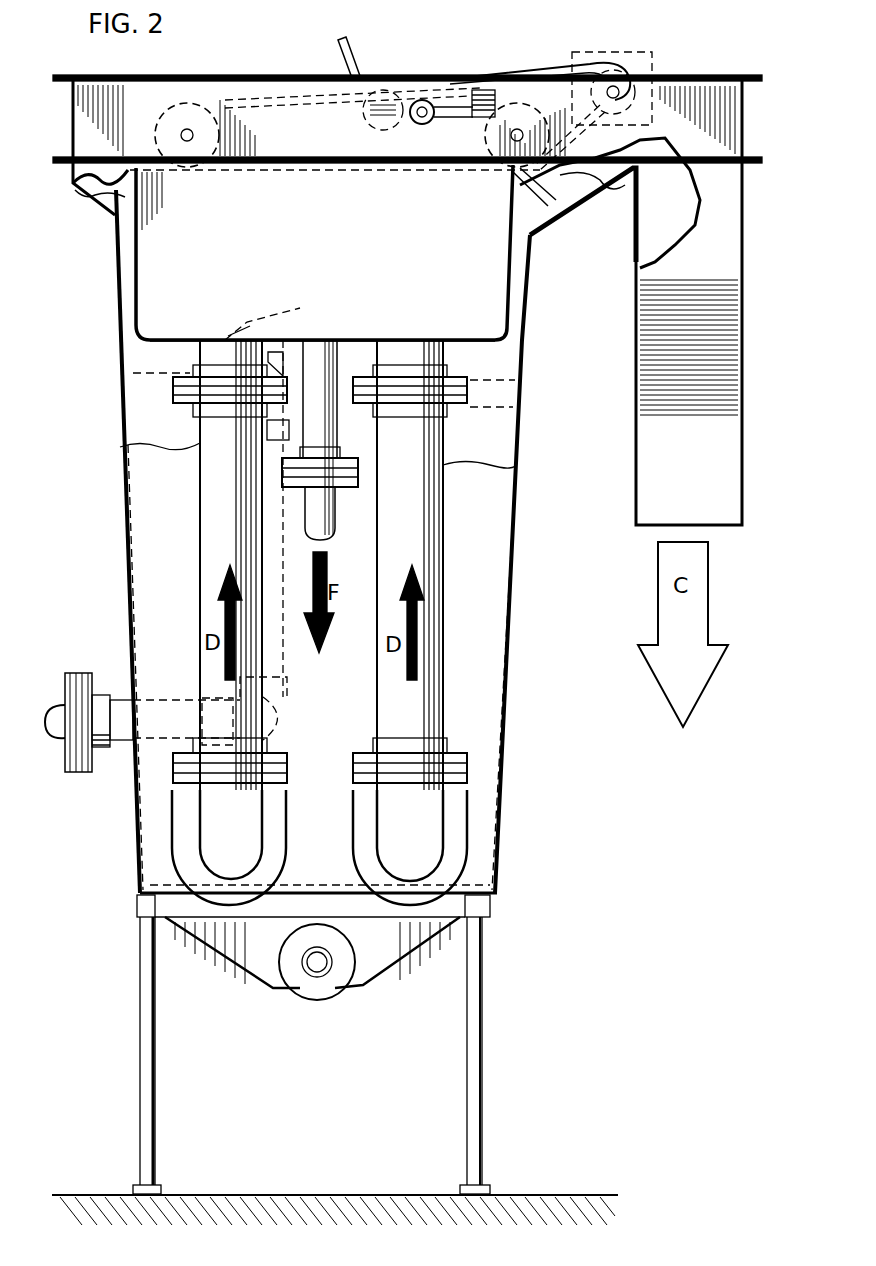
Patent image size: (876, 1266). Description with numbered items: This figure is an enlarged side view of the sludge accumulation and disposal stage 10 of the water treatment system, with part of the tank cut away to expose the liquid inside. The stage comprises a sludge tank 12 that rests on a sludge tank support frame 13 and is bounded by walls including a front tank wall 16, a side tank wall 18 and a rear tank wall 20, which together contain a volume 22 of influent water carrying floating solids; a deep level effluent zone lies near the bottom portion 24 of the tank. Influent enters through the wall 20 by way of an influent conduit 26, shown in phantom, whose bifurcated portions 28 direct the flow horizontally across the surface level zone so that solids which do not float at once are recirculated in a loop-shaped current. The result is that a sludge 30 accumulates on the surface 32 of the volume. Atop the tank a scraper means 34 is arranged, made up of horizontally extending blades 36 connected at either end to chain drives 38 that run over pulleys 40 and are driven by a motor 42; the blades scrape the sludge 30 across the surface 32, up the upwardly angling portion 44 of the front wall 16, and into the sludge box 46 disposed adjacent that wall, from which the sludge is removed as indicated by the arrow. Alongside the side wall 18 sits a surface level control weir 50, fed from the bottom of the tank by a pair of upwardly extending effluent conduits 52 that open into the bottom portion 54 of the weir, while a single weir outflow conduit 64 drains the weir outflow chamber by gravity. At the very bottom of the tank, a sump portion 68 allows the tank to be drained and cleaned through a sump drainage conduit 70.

The sludge accumulation and disposal stage 10 is at (106, 424).
The sludge tank 12 is at (118, 488).
The sludge tank support frame 13 is at (478, 985).
The front tank wall 16 is at (525, 315).
The side tank wall 18 is at (168, 543).
The tank wall 20 is at (128, 662).
The volume of influent water 22 is at (153, 422).
The bottom portion of sludge tank 24 is at (512, 840).
The influent conduit 26 is at (125, 745).
The bifurcated portions 28 is at (298, 308).
The sludge 30 is at (112, 214).
The surface 32 is at (108, 217).
The scraper means 34 is at (462, 36).
The scraper blades 36 is at (347, 55).
The chain drives 38 is at (252, 100).
The pulleys 40 is at (197, 103).
The motor 42 is at (643, 62).
The upwardly angling portion of tank wall 44 is at (595, 205).
The sludge box 46 is at (733, 393).
The surface level control weir 50 is at (130, 283).
The effluent conduits 52 is at (210, 565).
The bottom portion of weir 54 is at (515, 348).
The weir outflow conduit 64 is at (340, 430).
The sump portion 68 is at (388, 947).
The sump drainage conduit 70 is at (317, 993).